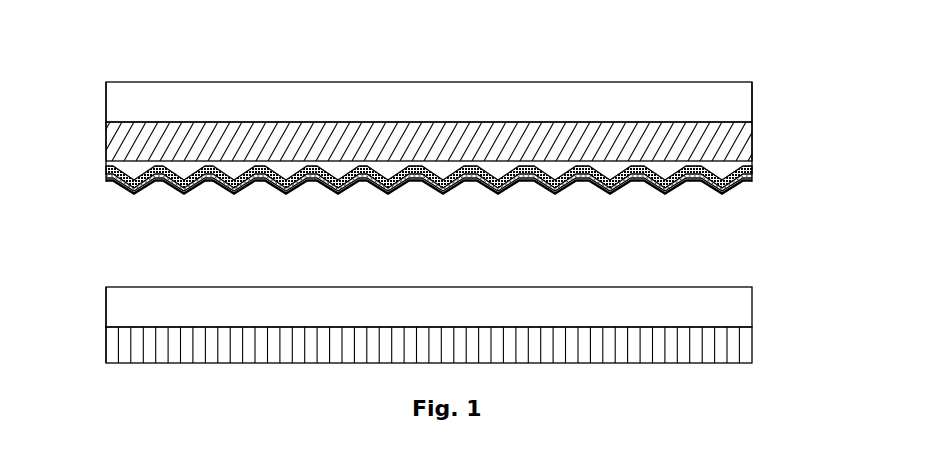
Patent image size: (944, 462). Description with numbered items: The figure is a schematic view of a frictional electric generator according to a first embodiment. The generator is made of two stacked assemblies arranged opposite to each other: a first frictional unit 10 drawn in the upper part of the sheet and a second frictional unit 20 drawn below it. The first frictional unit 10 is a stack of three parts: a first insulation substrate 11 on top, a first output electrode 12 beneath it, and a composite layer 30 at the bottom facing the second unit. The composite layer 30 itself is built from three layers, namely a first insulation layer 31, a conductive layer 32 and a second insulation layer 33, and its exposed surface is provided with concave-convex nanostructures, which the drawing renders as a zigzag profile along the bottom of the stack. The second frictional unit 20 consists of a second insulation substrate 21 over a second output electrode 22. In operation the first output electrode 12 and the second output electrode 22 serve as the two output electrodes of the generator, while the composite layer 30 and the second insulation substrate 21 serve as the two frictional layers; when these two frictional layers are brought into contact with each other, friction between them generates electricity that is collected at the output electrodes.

The first frictional unit 10 is at (95, 122).
The first insulation substrate 11 is at (752, 103).
The first output electrode 12 is at (752, 143).
The composite layer 30 is at (486, 181).
The first insulation layer 31 is at (752, 164).
The conductive layer 32 is at (752, 173).
The second insulation layer 33 is at (464, 201).
The second frictional unit 20 is at (95, 316).
The second insulation substrate 21 is at (752, 307).
The second output electrode 22 is at (752, 343).